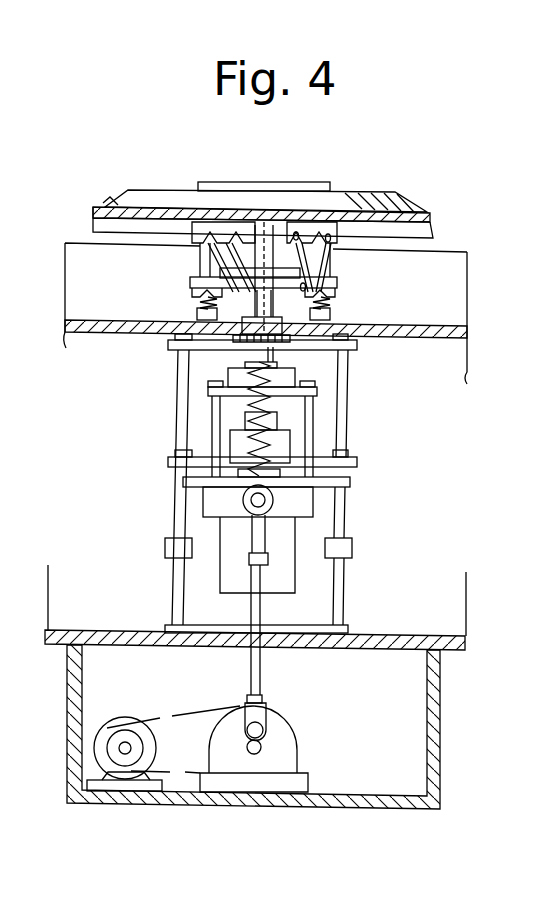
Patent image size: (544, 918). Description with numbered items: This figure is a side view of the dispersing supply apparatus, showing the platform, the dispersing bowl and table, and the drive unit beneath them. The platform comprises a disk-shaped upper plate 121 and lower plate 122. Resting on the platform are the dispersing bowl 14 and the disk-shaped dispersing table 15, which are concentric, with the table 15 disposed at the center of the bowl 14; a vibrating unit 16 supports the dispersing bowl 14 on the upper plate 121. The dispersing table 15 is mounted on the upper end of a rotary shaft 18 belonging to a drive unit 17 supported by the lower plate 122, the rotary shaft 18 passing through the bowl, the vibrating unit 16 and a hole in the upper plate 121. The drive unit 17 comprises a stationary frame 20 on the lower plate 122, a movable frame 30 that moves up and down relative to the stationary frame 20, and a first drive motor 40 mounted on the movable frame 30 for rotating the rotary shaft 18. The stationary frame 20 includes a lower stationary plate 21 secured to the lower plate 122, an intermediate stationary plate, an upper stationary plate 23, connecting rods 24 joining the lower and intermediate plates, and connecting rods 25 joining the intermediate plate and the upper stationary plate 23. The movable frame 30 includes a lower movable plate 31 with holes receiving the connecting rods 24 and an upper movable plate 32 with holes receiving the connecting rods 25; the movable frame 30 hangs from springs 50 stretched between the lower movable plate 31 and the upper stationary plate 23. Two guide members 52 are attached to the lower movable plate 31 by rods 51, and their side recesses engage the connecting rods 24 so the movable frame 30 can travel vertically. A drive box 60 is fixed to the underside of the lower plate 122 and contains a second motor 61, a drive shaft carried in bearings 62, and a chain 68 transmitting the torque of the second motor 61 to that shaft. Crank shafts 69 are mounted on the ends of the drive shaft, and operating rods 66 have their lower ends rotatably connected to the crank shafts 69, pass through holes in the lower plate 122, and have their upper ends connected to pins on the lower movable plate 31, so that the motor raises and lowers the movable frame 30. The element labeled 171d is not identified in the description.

The dispersing table 15 is at (366, 195).
The dispersing bowl 14 is at (427, 212).
The upper plate 121 is at (407, 327).
The vibrating unit 16 is at (197, 257).
The rotary shaft 18 is at (312, 308).
The upper stationary plate 23 is at (357, 348).
The connecting rods 25 is at (347, 393).
The rods 51 is at (343, 522).
The connecting rods 24 is at (350, 590).
The stationary frame 20 is at (350, 427).
The lower movable plate 31 is at (350, 482).
The upper movable plate 32 is at (207, 391).
The inner post 171d is at (213, 427).
The movable frame 30 is at (215, 373).
The springs 50 is at (263, 373).
The drive unit 17 is at (418, 472).
The first drive motor 40 is at (290, 568).
The guide members 52 is at (167, 550).
The lower stationary plate 21 is at (350, 628).
The lower plate 122 is at (400, 642).
The drive box 60 is at (438, 698).
The operating rods 66 is at (260, 673).
The second motor 61 is at (118, 722).
The chain 68 is at (193, 715).
The bearings 62 is at (290, 745).
The crank shafts 69 is at (262, 728).